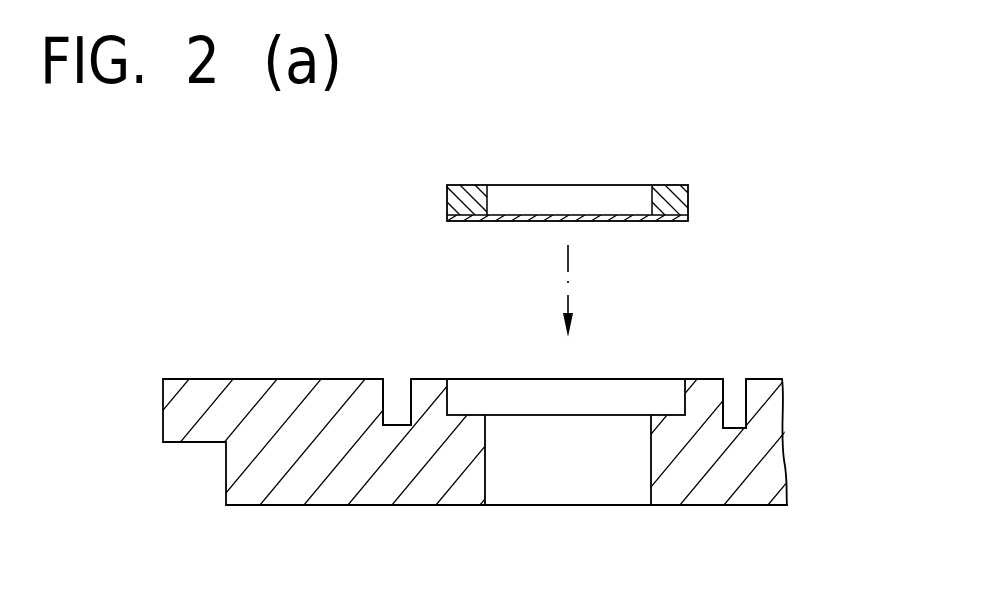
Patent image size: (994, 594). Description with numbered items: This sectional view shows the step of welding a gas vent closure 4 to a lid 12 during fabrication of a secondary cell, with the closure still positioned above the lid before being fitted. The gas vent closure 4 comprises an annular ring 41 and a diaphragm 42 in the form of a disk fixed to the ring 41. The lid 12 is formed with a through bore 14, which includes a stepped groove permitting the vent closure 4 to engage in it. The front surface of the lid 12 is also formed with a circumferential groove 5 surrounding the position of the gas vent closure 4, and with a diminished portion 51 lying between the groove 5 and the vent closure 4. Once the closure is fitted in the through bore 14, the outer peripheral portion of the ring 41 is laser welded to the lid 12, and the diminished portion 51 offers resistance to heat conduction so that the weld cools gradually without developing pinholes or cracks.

The gas vent closure 4 is at (612, 203).
The annular ring 41 is at (691, 189).
The diaphragm 42 is at (687, 223).
The lid 12 is at (514, 428).
The circumferential groove 5 is at (384, 393).
The diminished portion 51 is at (428, 392).
The through bore 14 is at (485, 473).